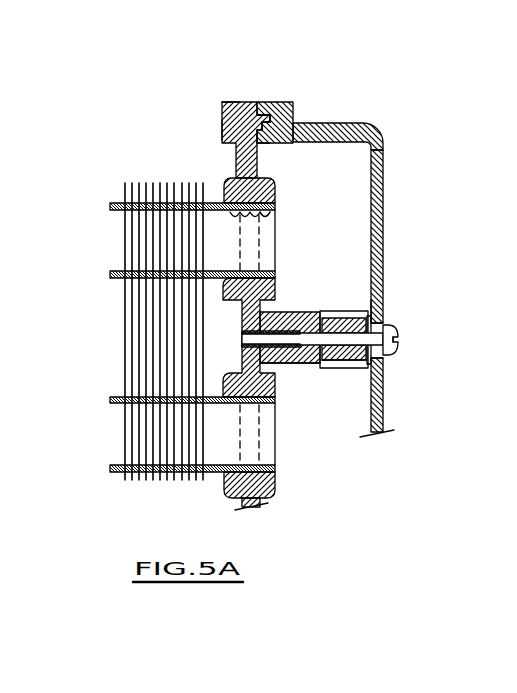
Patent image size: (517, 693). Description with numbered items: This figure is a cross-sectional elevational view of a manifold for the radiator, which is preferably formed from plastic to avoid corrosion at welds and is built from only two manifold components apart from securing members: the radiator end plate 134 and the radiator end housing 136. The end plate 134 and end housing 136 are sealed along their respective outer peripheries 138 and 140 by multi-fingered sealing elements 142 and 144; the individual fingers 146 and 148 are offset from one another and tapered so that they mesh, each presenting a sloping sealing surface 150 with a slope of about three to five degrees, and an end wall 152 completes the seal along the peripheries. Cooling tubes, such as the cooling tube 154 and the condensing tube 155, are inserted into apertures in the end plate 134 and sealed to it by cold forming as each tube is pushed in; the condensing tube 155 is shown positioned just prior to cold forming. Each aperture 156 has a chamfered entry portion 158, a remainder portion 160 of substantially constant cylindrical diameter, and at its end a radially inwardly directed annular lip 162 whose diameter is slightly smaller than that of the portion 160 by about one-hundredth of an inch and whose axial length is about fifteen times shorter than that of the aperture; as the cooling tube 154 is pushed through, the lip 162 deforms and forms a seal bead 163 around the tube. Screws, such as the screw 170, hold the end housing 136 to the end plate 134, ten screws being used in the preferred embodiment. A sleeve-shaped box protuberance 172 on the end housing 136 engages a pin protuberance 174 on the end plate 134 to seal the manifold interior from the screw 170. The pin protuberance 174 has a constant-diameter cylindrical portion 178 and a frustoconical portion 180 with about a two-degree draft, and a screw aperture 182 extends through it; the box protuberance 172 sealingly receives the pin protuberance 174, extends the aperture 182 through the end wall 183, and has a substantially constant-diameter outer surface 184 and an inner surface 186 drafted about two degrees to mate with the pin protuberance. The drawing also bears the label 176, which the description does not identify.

The radiator end plate 134 is at (236, 162).
The radiator end housing 136 is at (384, 206).
The outer periphery of end plate 138 is at (228, 128).
The outer periphery of end housing 140 is at (280, 106).
The multi-fingered sealing element 142 is at (257, 108).
The multi-fingered sealing element 144 is at (280, 118).
The finger 146 is at (262, 137).
The finger 148 is at (260, 146).
The sloping sealing surface 150 is at (270, 112).
The end wall 152 is at (225, 102).
The cooling tube 154 is at (114, 200).
The condensing tube 155 is at (112, 398).
The aperture 156 is at (228, 186).
The chamfered entry portion 158 is at (216, 214).
The remainder portion 160 is at (266, 222).
The annular lip 162 is at (276, 468).
The seal bead 163 is at (275, 278).
The screw 170 is at (386, 347).
The box protuberance 172 is at (358, 368).
The pin protuberance 174 is at (296, 312).
The tube hub 176 is at (242, 353).
The cylindrical portion 178 is at (282, 363).
The frustoconical portion 180 is at (372, 297).
The screw aperture 182 is at (282, 312).
The end wall 183 is at (388, 320).
The outer surface 184 is at (348, 368).
The inner surface 186 is at (370, 312).